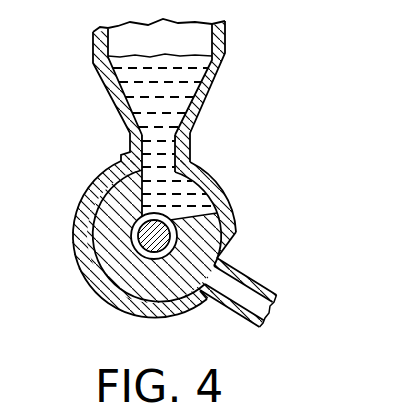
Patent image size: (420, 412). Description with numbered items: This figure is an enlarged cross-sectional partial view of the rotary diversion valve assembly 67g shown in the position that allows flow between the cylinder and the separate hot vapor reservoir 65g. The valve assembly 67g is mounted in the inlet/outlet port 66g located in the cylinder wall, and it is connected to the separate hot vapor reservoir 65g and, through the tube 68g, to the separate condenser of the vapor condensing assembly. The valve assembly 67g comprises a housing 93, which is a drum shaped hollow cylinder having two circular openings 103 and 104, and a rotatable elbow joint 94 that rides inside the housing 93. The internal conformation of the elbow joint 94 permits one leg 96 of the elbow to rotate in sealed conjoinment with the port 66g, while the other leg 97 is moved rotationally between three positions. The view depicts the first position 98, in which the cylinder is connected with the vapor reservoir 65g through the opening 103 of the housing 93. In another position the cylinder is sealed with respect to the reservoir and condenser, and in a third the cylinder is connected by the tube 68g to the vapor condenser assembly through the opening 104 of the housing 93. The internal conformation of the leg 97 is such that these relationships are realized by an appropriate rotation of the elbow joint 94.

The separate hot vapor reservoir 65g is at (197, 40).
The circular opening 103 is at (165, 150).
The inlet/outlet port 66g is at (191, 244).
The housing 93 is at (95, 190).
The rotatable elbow joint 94 is at (113, 291).
The first position 98 is at (190, 201).
The leg of the elbow 96 is at (170, 228).
The other leg of the elbow 97 is at (205, 238).
The rotary diversion valve assembly 67g is at (247, 242).
The tube 68g is at (263, 281).
The circular opening 104 is at (212, 275).